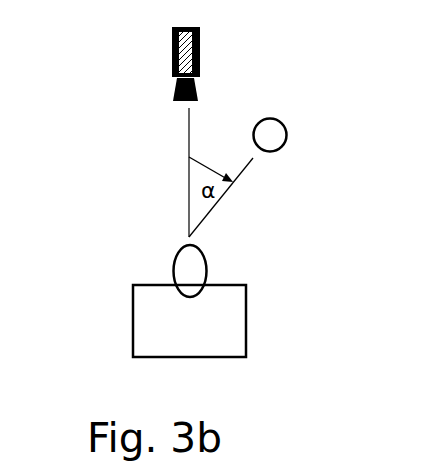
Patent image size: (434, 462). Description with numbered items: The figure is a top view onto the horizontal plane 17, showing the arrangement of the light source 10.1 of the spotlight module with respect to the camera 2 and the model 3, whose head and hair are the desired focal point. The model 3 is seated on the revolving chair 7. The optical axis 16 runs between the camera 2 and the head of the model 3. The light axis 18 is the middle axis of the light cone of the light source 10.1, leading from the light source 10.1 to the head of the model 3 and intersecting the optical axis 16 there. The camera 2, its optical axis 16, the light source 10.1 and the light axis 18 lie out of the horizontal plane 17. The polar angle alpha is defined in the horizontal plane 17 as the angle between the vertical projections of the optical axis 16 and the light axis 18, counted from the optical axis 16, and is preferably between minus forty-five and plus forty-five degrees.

The camera 2 is at (172, 55).
The optical axis 16 is at (188, 127).
The light source 10.1 is at (266, 138).
The light axis 18 is at (245, 173).
The horizontal plane 17 is at (282, 236).
The model 3 is at (154, 260).
The revolving chair 7 is at (148, 340).